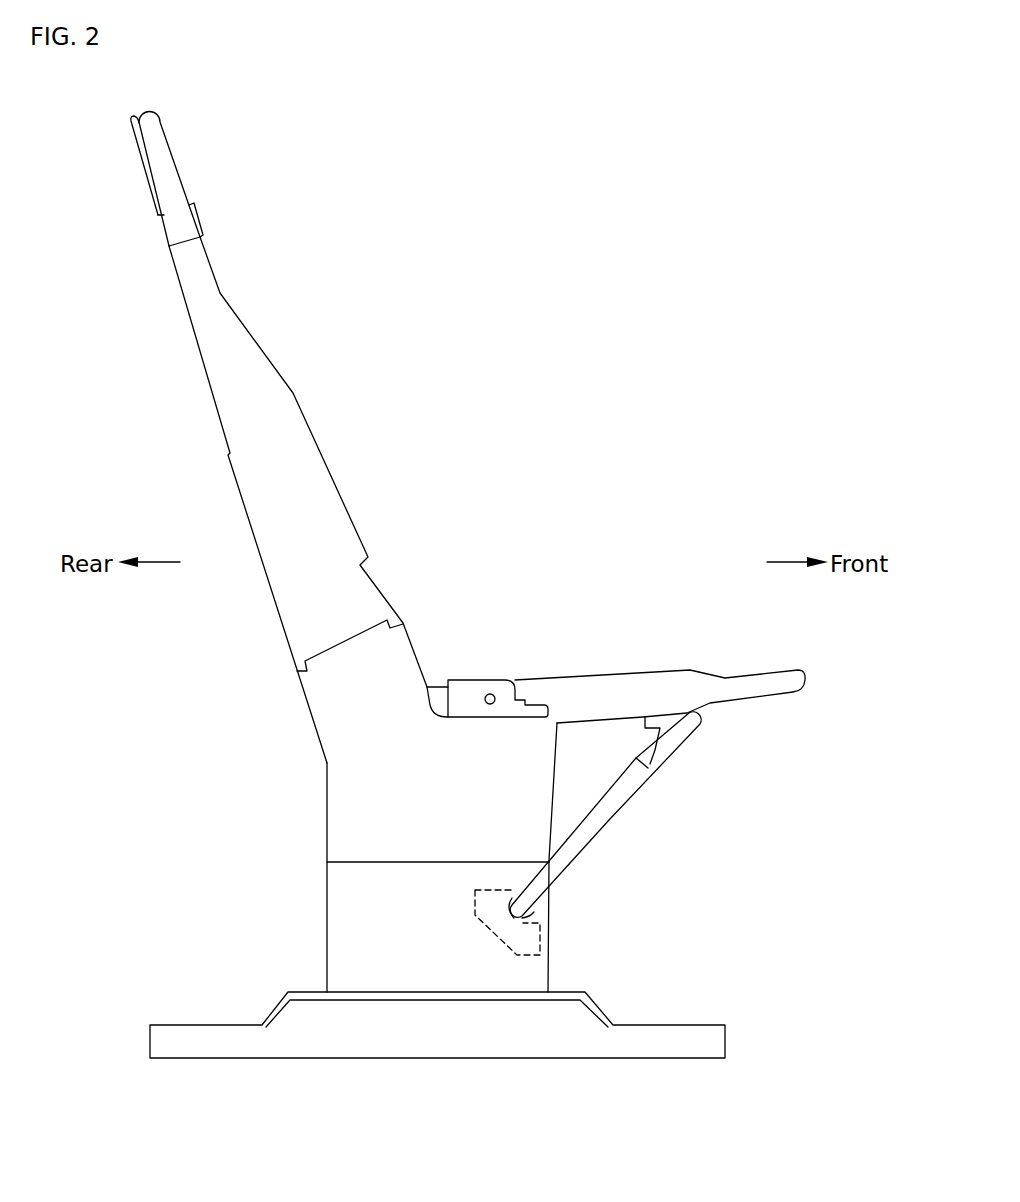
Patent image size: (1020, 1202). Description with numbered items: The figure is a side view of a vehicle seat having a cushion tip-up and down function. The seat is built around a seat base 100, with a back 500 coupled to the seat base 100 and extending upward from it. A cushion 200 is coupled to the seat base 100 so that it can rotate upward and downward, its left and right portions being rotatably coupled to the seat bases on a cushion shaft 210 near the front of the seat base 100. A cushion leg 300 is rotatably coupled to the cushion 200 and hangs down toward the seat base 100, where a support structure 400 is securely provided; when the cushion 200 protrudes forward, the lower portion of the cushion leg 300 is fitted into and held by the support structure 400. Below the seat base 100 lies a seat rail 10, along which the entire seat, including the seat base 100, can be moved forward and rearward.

The seat rail 10 is at (442, 1038).
The seat base 100 is at (345, 913).
The cushion 200 is at (653, 690).
The cushion shaft 210 is at (490, 693).
The cushion leg 300 is at (607, 807).
The support structure 400 is at (540, 938).
The back 500 is at (237, 400).